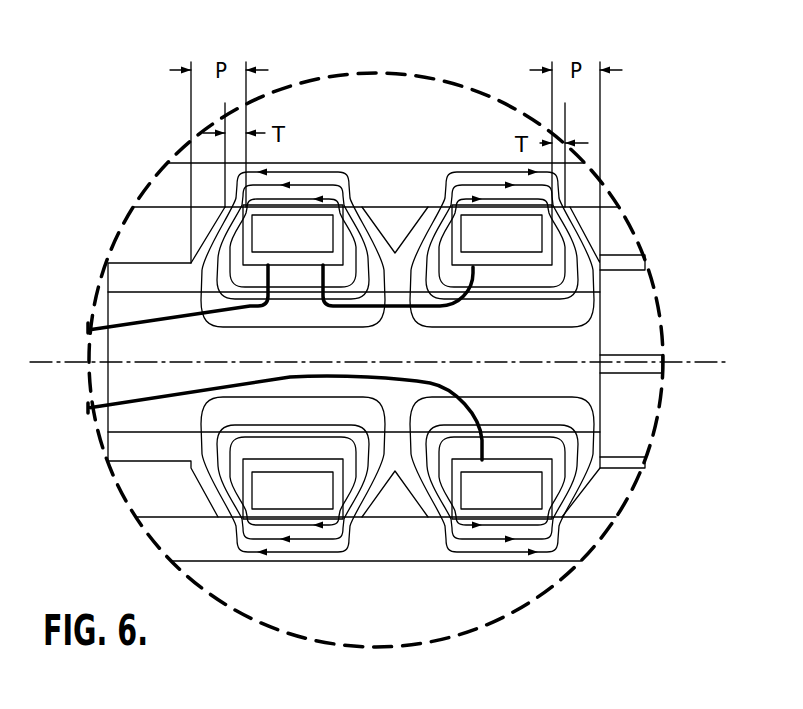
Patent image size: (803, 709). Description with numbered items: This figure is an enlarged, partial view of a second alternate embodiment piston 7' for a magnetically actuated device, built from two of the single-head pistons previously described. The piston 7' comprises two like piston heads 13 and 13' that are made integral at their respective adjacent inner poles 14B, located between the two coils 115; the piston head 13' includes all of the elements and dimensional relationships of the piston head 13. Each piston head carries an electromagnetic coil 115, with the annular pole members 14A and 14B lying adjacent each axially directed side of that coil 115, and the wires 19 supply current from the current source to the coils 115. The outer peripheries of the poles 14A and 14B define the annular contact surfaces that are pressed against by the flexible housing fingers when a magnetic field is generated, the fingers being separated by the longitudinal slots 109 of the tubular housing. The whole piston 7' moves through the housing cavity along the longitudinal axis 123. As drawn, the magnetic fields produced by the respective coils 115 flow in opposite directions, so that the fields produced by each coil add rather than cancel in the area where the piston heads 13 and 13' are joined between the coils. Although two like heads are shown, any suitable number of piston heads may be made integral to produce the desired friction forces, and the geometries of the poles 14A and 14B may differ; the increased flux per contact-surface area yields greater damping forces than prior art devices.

The piston head 13 is at (161, 336).
The piston head 13' is at (636, 289).
The wire 19 is at (92, 418).
The annular pole 14A is at (578, 482).
The annular pole 14B is at (422, 222).
The longitudinal slot 109 is at (623, 468).
The coil 115 is at (512, 502).
The longitudinal axis 123 is at (708, 363).
The piston 7' is at (360, 360).